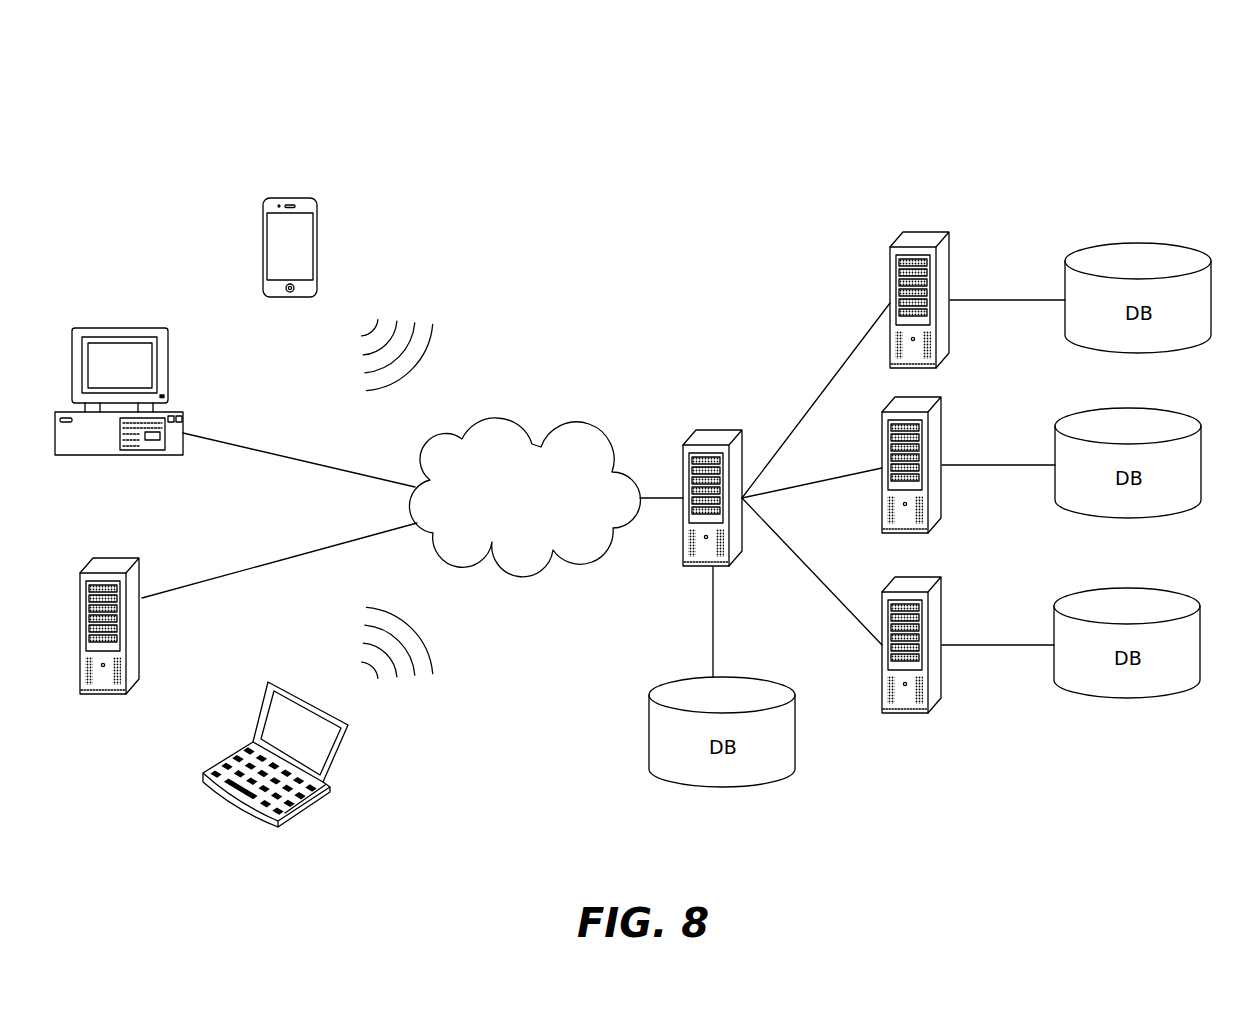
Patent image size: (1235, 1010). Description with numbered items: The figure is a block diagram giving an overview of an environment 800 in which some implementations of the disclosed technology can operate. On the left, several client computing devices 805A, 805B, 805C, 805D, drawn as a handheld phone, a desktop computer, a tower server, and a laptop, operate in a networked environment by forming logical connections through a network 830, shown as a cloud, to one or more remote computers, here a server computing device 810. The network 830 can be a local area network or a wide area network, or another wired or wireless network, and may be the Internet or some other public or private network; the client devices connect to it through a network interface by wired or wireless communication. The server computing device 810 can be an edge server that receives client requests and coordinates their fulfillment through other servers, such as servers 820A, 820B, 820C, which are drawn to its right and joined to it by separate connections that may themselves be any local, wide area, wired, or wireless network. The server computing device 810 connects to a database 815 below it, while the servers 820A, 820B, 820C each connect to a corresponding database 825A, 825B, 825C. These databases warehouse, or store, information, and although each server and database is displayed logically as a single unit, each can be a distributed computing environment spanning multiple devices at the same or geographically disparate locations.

The environment 800 is at (1010, 112).
The client computing device 805A is at (307, 193).
The client computing device 805B is at (158, 328).
The client computing device 805C is at (133, 553).
The client computing device 805D is at (347, 755).
The server computing device 810 is at (725, 430).
The database 815 is at (772, 678).
The server 820A is at (950, 232).
The server 820B is at (940, 398).
The server 820C is at (942, 577).
The database 825A is at (1133, 240).
The database 825B is at (1127, 400).
The database 825C is at (1123, 587).
The network 830 is at (580, 420).